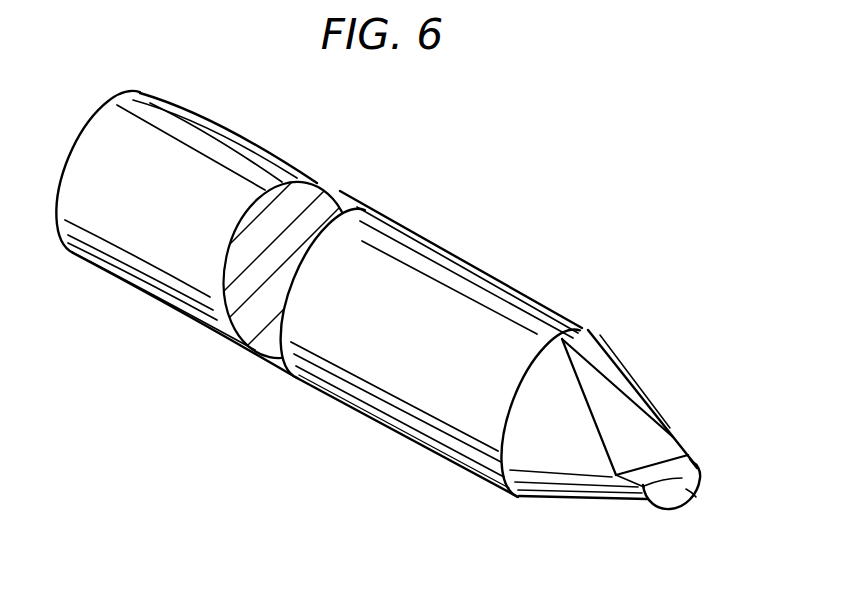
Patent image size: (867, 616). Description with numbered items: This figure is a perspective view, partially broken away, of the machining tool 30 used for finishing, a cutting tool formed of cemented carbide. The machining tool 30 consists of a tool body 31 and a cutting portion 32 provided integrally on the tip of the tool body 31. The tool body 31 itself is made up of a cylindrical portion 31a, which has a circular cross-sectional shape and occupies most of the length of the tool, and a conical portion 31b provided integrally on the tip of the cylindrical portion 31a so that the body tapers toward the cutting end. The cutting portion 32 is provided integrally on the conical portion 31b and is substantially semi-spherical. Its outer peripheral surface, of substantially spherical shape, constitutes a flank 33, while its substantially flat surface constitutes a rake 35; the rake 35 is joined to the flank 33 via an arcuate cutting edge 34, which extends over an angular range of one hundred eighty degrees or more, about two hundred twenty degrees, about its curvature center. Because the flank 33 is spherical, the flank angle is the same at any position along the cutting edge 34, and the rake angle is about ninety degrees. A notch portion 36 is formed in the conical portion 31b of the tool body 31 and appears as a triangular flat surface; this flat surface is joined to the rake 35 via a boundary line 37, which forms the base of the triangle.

The machining tool 30 is at (426, 340).
The tool body 31 is at (179, 297).
The cylindrical portion 31a is at (347, 387).
The conical portion 31b is at (561, 490).
The cutting portion 32 is at (679, 459).
The flank 33 is at (672, 503).
The cutting edge 34 is at (698, 467).
The rake 35 is at (702, 480).
The notch portion 36 is at (612, 408).
The boundary line 37 is at (654, 447).